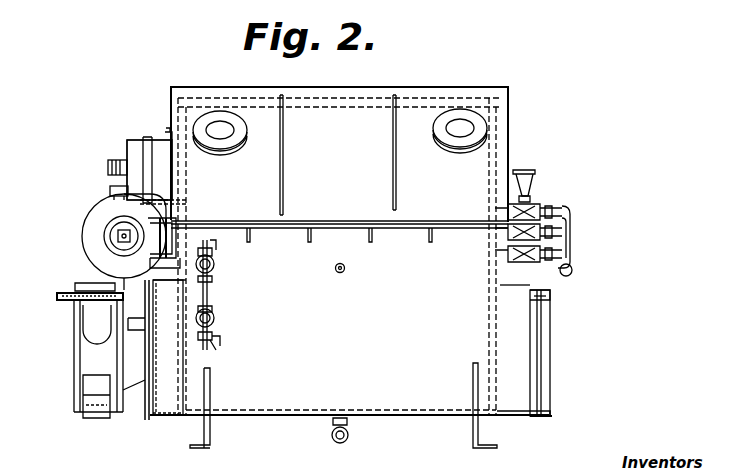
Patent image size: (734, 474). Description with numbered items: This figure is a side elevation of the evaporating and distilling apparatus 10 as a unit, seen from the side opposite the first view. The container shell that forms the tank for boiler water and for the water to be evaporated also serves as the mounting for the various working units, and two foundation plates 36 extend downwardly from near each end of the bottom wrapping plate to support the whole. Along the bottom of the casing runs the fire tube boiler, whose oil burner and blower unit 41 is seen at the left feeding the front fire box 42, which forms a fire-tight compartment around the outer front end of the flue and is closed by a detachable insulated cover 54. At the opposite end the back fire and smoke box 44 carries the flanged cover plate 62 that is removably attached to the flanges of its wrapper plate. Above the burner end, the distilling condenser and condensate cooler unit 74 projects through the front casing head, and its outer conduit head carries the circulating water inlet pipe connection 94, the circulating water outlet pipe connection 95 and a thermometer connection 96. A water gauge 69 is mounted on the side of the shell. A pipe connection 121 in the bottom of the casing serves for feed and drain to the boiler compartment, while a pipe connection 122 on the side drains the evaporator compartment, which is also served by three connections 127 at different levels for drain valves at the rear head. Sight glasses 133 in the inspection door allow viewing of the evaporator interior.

The evaporating and distilling apparatus 10 is at (349, 275).
The sight glasses 133 is at (230, 142).
The distilling condenser and condensate cooler unit 74 is at (140, 144).
The circulating water outlet pipe connection 95 is at (110, 163).
The thermometer connection 96 is at (118, 190).
The circulating water inlet pipe connection 94 is at (100, 200).
The oil burner and blower unit 41 is at (80, 270).
The detachable insulated cover 54 is at (147, 410).
The front fire box 42 is at (170, 420).
The foundation plates 36 is at (210, 442).
The pipe connection 121 is at (335, 430).
The pipe connection 122 is at (338, 275).
The water gauge 69 is at (212, 292).
The connections 127 is at (508, 258).
The flanged cover plate 62 is at (550, 390).
The back fire and smoke box 44 is at (518, 412).